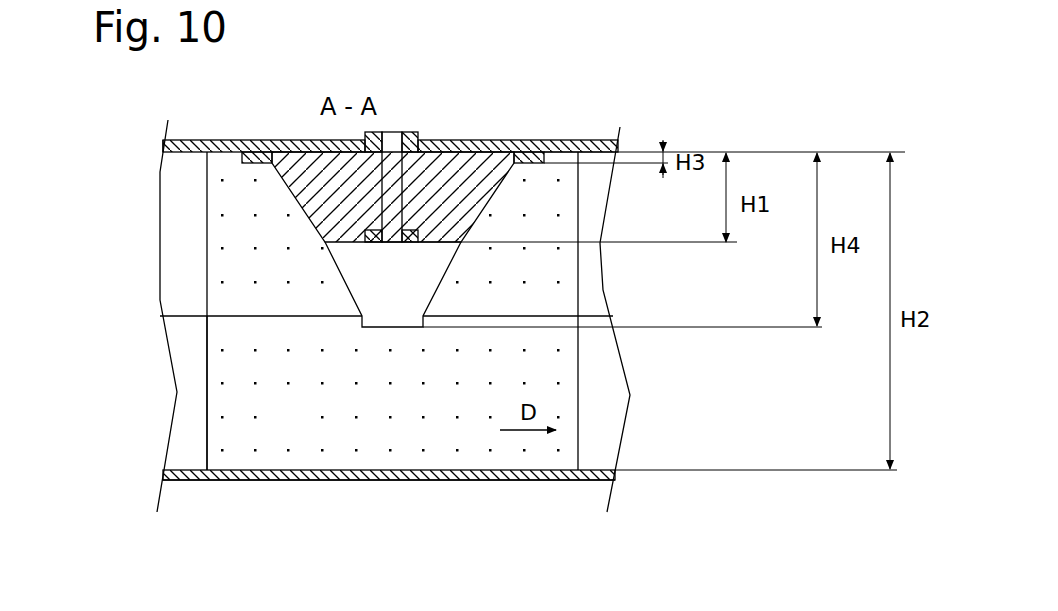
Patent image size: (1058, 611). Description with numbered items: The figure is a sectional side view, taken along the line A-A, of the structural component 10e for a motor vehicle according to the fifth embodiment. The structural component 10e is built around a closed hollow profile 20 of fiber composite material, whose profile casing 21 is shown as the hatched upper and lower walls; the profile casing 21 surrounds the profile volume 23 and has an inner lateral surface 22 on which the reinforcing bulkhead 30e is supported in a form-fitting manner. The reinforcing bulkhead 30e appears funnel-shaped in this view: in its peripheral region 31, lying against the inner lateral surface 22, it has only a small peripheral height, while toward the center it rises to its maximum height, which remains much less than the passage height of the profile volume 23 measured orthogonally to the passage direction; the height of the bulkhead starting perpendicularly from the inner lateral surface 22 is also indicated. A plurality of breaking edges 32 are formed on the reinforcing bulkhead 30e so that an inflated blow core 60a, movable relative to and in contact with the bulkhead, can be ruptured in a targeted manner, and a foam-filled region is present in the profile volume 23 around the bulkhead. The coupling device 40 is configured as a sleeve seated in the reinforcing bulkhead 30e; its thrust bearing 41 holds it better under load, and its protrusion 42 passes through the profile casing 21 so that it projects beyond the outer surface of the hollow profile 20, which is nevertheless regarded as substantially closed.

The structural component 10e is at (234, 529).
The closed hollow profile 20 is at (430, 486).
The profile casing 21 is at (340, 481).
The inner lateral surface 22 is at (283, 466).
The profile volume 23 is at (225, 438).
The reinforcing bulkhead 30e is at (293, 213).
The peripheral region 31 is at (247, 176).
The breaking edge 32 is at (495, 196).
The coupling device 40 is at (398, 246).
The thrust bearing 41 is at (410, 243).
The protrusion 42 is at (418, 134).
The inflated blow core 60a is at (205, 358).